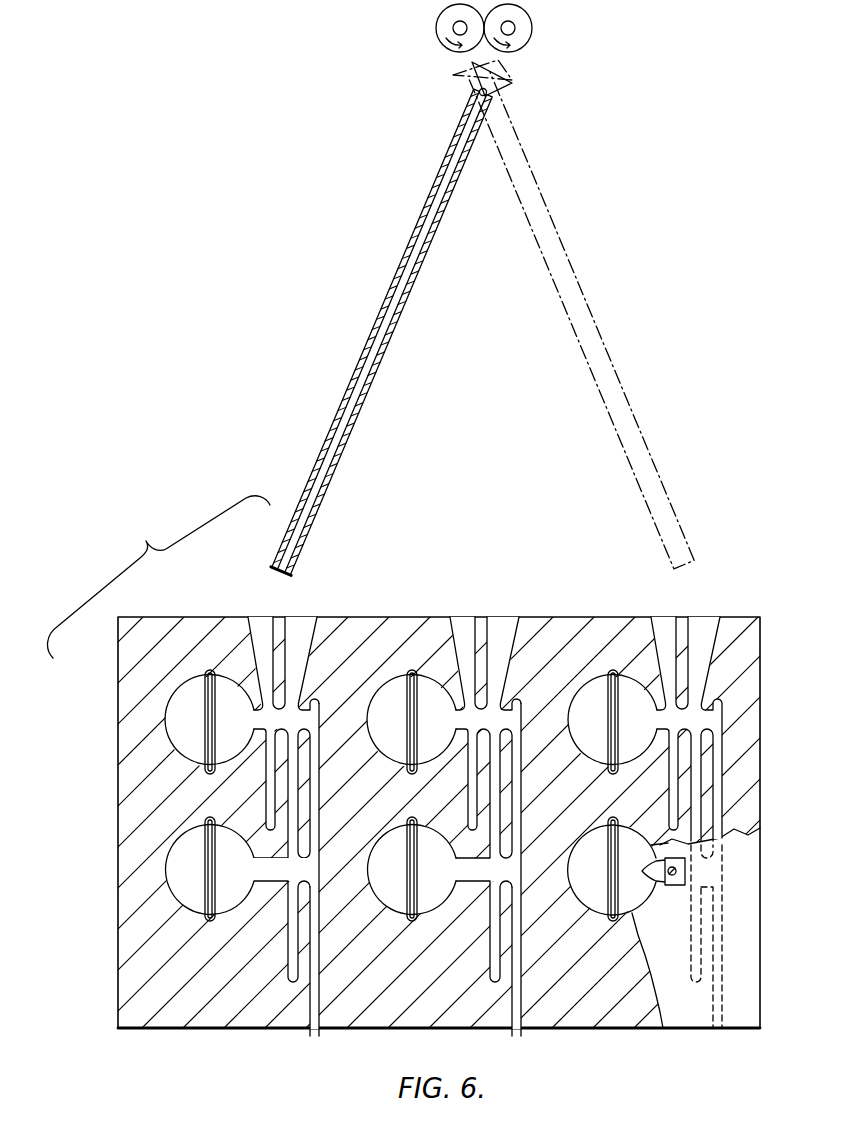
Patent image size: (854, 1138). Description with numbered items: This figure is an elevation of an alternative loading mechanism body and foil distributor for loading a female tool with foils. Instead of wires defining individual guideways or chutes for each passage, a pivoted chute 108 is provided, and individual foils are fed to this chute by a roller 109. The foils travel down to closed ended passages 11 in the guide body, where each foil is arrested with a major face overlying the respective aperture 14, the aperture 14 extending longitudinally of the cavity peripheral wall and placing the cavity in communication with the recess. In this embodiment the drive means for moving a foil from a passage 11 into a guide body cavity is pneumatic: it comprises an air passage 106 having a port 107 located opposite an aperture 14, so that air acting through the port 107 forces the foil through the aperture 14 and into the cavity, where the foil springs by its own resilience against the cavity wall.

The closed ended passage 11 is at (707, 637).
The aperture 14 is at (260, 866).
The air passage 106 is at (417, 886).
The port 107 is at (303, 866).
The pivoted chute 108 is at (397, 271).
The roller 109 is at (529, 39).